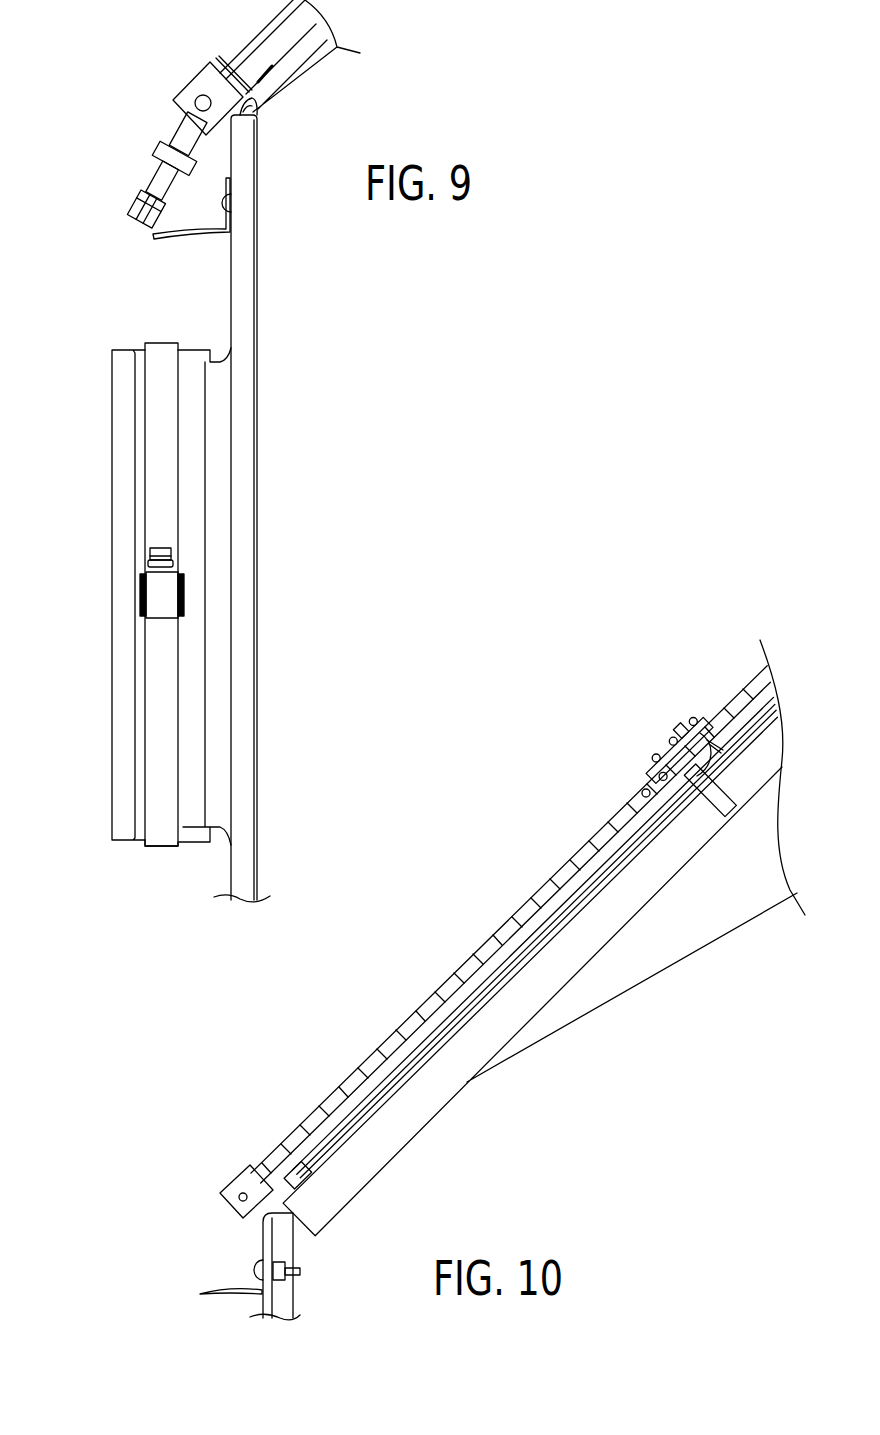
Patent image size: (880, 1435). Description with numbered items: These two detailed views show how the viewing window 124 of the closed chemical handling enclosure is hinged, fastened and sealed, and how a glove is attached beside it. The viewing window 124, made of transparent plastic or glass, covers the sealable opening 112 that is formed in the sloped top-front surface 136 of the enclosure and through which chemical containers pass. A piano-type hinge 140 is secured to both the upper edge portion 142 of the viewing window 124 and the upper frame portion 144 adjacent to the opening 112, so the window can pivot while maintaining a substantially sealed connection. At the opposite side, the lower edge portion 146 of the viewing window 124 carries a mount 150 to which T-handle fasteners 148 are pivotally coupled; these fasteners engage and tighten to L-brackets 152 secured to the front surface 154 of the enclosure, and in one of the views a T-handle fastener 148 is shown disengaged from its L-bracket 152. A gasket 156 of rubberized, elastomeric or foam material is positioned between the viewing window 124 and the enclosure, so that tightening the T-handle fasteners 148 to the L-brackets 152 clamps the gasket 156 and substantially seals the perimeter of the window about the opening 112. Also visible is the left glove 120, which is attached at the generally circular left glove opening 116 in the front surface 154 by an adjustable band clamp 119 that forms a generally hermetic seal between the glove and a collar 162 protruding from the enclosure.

In FIG. 10, the sealable opening 112 is at (393, 1103).
In FIG. 9, the left glove opening 116 is at (162, 848).
In FIG. 9, the adjustable band clamp 119 is at (165, 517).
In FIG. 9, the left glove 120 is at (112, 790).
In FIG. 9, the viewing window 124 is at (262, 33).
In FIG. 10, the viewing window 124 is at (385, 1058).
In FIG. 10, the sloped top-front surface 136 is at (743, 688).
In FIG. 10, the piano-type hinge 140 is at (673, 741).
In FIG. 10, the upper edge portion 142 is at (672, 765).
In FIG. 10, the upper frame portion 144 is at (697, 780).
In FIG. 9, the lower edge portion 146 is at (258, 98).
In FIG. 9, the T-handle fastener 148 is at (153, 156).
In FIG. 9, the mount 150 is at (178, 108).
In FIG. 9, the L-bracket 152 is at (200, 235).
In FIG. 10, the L-bracket 152 is at (200, 1293).
In FIG. 9, the front surface 154 is at (231, 290).
In FIG. 10, the front surface 154 is at (263, 1310).
In FIG. 9, the gasket 156 is at (268, 63).
In FIG. 10, the gasket 156 is at (665, 795).
In FIG. 9, the collar 162 is at (220, 397).